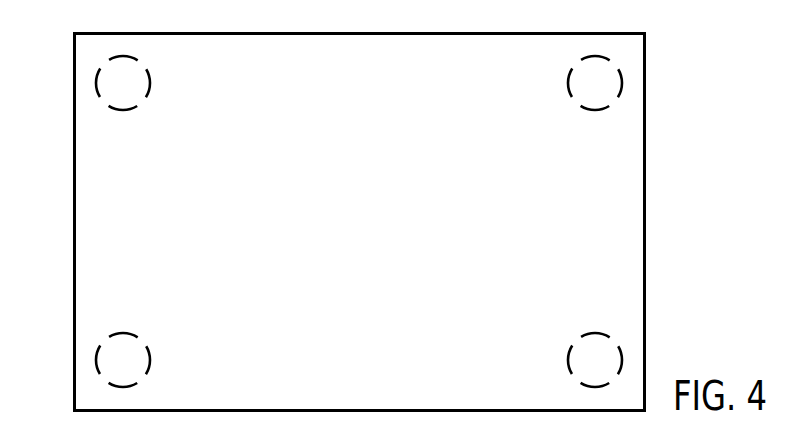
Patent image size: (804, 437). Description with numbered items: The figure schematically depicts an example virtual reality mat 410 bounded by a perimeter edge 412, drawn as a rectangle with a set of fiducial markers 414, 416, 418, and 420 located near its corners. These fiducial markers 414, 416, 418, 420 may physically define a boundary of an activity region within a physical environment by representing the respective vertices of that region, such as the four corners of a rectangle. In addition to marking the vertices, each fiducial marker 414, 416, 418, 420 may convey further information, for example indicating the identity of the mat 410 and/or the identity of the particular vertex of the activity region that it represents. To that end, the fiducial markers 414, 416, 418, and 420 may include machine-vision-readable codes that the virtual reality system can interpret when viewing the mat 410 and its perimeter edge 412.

The mat 410 is at (511, 167).
The perimeter edge 412 is at (645, 121).
The fiducial marker 414 is at (128, 57).
The fiducial marker 416 is at (621, 73).
The fiducial marker 418 is at (620, 349).
The fiducial marker 420 is at (95, 363).